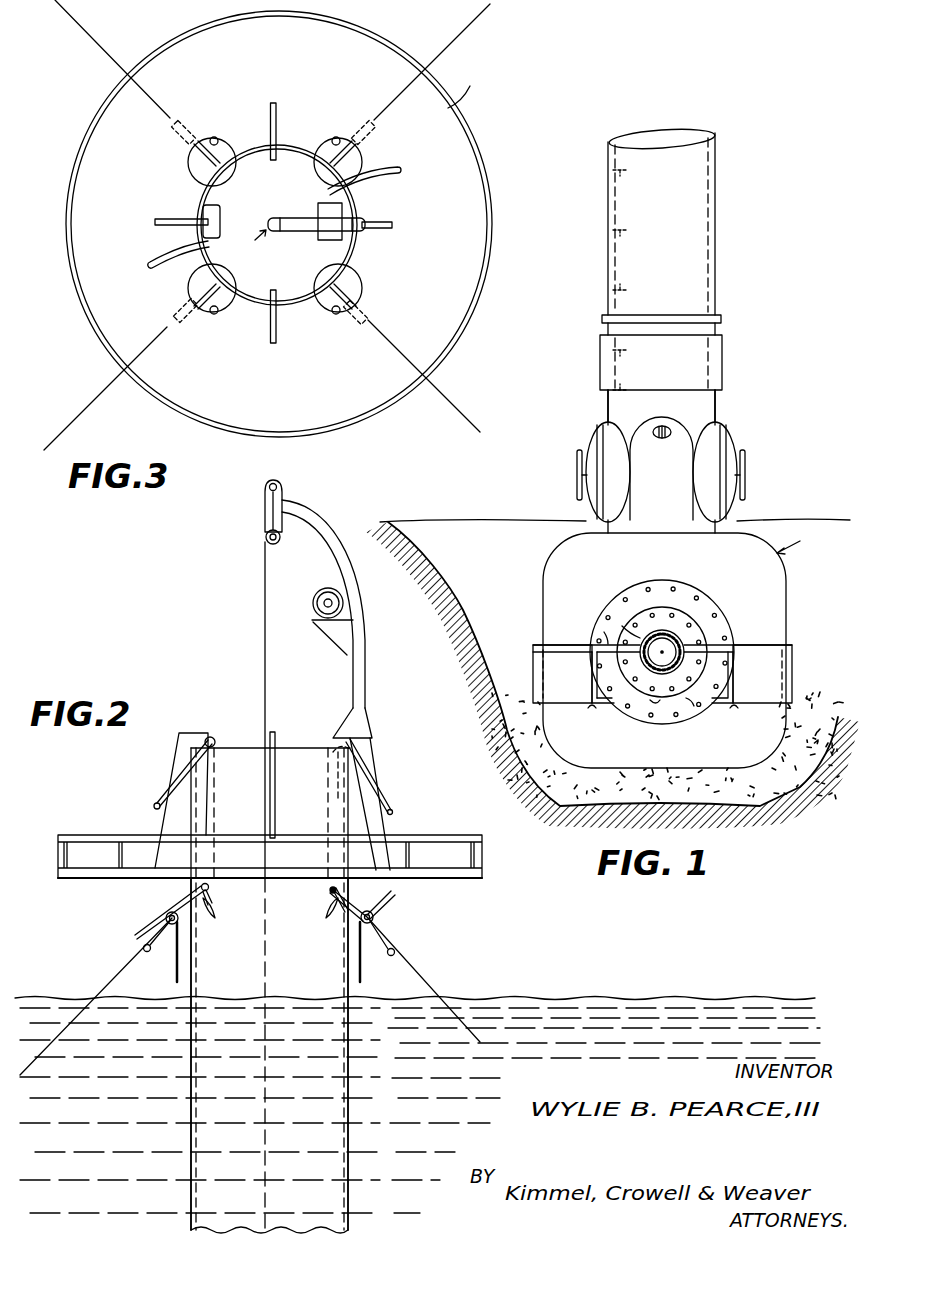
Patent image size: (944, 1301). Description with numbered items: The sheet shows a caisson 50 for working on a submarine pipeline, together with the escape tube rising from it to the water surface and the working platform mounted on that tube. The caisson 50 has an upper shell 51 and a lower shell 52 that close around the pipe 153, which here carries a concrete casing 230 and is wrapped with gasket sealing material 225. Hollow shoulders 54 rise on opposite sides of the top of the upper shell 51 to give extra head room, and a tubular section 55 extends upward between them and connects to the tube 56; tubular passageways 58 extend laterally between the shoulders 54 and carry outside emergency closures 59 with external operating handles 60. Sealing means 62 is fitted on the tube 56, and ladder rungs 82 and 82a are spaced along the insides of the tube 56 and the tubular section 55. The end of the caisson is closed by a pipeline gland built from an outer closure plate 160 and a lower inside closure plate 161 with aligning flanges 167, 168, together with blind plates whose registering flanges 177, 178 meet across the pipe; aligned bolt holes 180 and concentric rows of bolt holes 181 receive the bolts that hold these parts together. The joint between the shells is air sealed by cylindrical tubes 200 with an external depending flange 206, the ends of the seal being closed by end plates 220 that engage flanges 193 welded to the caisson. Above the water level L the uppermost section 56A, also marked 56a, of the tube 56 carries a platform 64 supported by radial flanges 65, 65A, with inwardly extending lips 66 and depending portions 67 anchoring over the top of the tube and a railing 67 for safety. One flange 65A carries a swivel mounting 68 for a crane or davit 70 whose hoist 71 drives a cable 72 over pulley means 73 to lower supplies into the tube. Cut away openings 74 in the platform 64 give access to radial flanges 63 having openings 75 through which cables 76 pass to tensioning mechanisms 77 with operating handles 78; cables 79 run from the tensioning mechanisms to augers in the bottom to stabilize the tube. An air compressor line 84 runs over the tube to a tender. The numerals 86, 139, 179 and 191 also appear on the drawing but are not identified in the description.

In FIG. 1, the caisson 50 is at (801, 541).
In FIG. 1, the upper shell 51 is at (760, 583).
In FIG. 1, the lower shell 52 is at (771, 745).
In FIG. 1, the hollow upwardly extending shoulders 54 is at (708, 418).
In FIG. 1, the tubular section 55 is at (700, 403).
In FIG. 1, the tube 56 is at (706, 238).
In FIG. 3, the top portion of tube 56A is at (258, 306).
In FIG. 2, the top portion of tube 56A is at (348, 993).
In FIG. 2, the top portion of tube 56a is at (343, 800).
In FIG. 1, the tubular passageways 58 is at (611, 430).
In FIG. 1, the outside emergency closures 59 is at (592, 440).
In FIG. 1, the external operating handles 60 is at (575, 470).
In FIG. 1, the sealing means 62 is at (738, 346).
In FIG. 3, the radial flanges 63 is at (197, 167).
In FIG. 2, the radial flanges 63 is at (215, 905).
In FIG. 3, the platform 64 is at (118, 105).
In FIG. 2, the platform 64 is at (482, 869).
In FIG. 3, the radially positioned flanges 65 is at (273, 106).
In FIG. 2, the radially positioned flanges 65 is at (274, 732).
In FIG. 3, the flange 65A is at (396, 208).
In FIG. 2, the flange 65A is at (366, 760).
In FIG. 2, the inwardly extending lips 66 is at (210, 737).
In FIG. 3, the depending portions 67 is at (471, 86).
In FIG. 2, the depending portions 67 is at (200, 787).
In FIG. 2, the swivel mounting 68 is at (355, 730).
In FIG. 3, the crane or davit 70 is at (294, 220).
In FIG. 2, the crane or davit 70 is at (358, 652).
In FIG. 3, the hoist 71 is at (326, 204).
In FIG. 2, the hoist 71 is at (322, 590).
In FIG. 2, the cable 72 is at (263, 618).
In FIG. 3, the pulley means 73 is at (251, 244).
In FIG. 2, the pulley means 73 is at (266, 538).
In FIG. 3, the cut away openings 74 is at (214, 134).
In FIG. 2, the openings 75 is at (212, 887).
In FIG. 3, the cables 76 is at (217, 140).
In FIG. 2, the cables 76 is at (186, 907).
In FIG. 3, the tensioning mechanism 77 is at (169, 137).
In FIG. 2, the tensioning mechanism 77 is at (164, 937).
In FIG. 2, the operating handles 78 is at (150, 930).
In FIG. 3, the cables 79 is at (85, 32).
In FIG. 2, the cables 79 is at (117, 975).
In FIG. 3, the ladder rungs 82 is at (222, 211).
In FIG. 1, the ladder rungs 82 is at (625, 288).
In FIG. 1, the ladder rungs 82a is at (628, 360).
In FIG. 3, the air compressor line 84 is at (394, 169).
In FIG. 2, the air compressor line 84 is at (385, 813).
In FIG. 3, the arm 86 is at (159, 254).
In FIG. 2, the arm 86 is at (154, 805).
In FIG. 1, the fitting 139 is at (666, 439).
In FIG. 1, the pipe 153 is at (688, 617).
In FIG. 1, the outer closure plate 160 is at (663, 622).
In FIG. 1, the lower inside closure plate 161 is at (690, 701).
In FIG. 1, the aligning flange 167 is at (605, 637).
In FIG. 1, the aligning flange 168 is at (598, 665).
In FIG. 1, the registering flange 177 is at (623, 638).
In FIG. 1, the registering flange 178 is at (607, 683).
In FIG. 1, the frame bottom 179 is at (641, 700).
In FIG. 1, the aligned bolt holes 180 is at (641, 615).
In FIG. 1, the concentric rows of bolt holes 181 is at (652, 592).
In FIG. 1, the frame bottom 191 is at (719, 706).
In FIG. 1, the flanges 193 is at (605, 713).
In FIG. 1, the cylindrical tubes 200 is at (792, 645).
In FIG. 1, the external depending flange 206 is at (790, 659).
In FIG. 1, the end plates 220 is at (776, 662).
In FIG. 1, the gasket sealing material 225 is at (663, 700).
In FIG. 1, the concrete casing 230 is at (672, 639).
In FIG. 2, the water level L is at (520, 995).